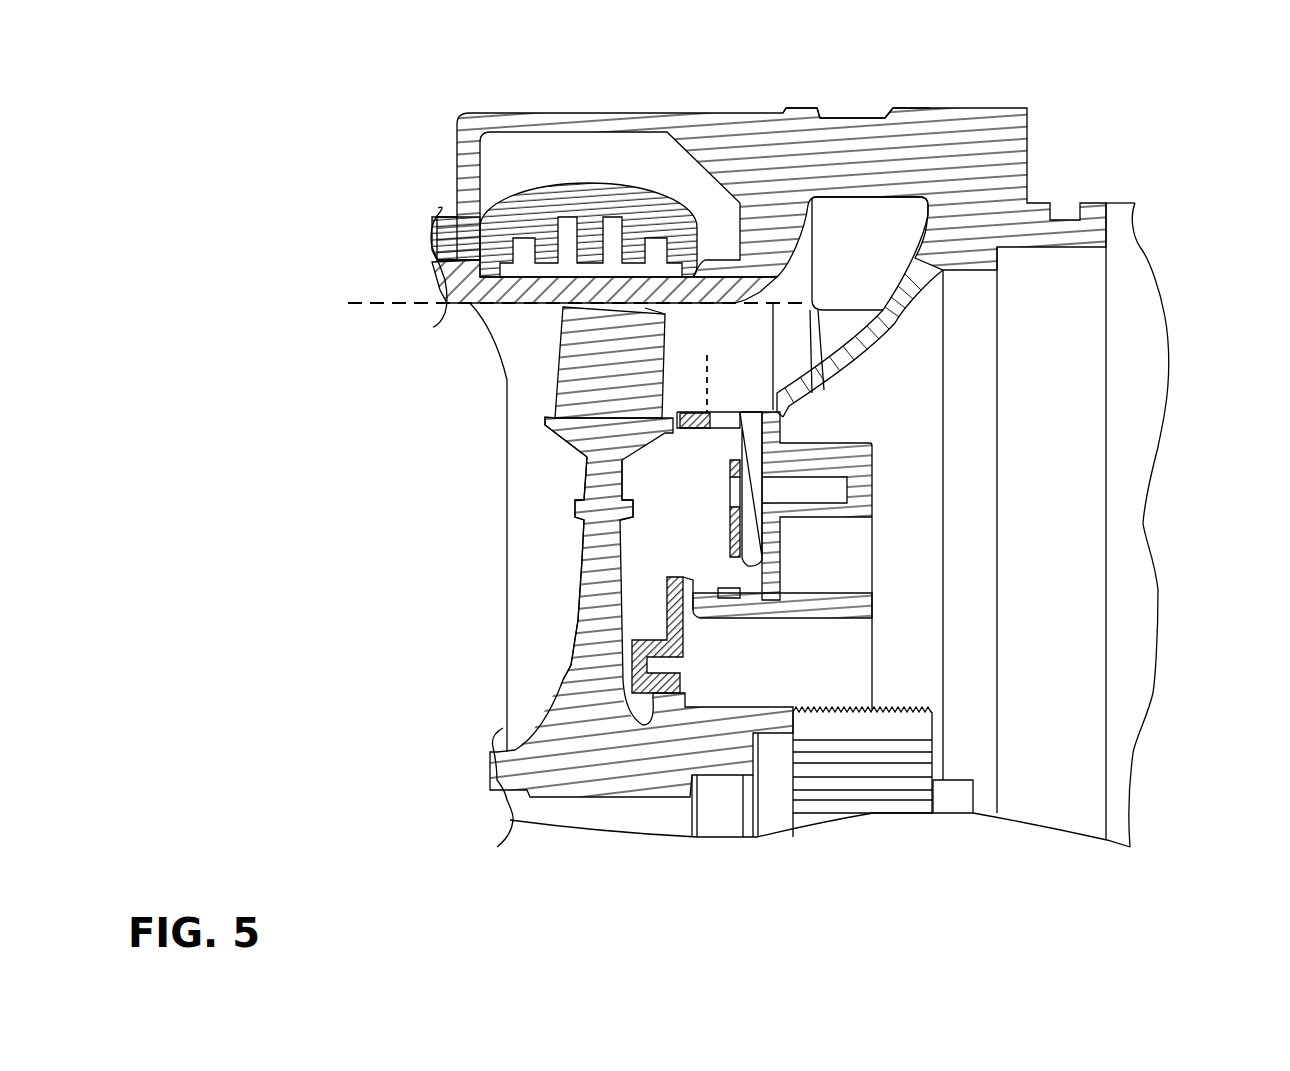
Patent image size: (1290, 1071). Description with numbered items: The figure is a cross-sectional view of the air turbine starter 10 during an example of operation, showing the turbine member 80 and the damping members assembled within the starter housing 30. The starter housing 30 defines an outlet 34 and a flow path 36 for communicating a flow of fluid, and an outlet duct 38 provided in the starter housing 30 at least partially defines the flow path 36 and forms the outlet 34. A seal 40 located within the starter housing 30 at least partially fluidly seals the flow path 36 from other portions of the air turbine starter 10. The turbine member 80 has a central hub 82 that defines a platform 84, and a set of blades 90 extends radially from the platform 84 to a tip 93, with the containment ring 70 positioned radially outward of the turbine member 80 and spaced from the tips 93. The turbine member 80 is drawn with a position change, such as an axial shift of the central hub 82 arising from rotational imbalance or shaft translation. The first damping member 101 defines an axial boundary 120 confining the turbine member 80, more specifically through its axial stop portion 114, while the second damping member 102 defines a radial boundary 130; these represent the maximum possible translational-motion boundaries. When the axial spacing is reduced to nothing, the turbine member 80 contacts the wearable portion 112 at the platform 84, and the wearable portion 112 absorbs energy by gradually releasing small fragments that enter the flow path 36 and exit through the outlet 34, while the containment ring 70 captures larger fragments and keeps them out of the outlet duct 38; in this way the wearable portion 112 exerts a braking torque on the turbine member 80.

The air turbine starter 10 is at (1273, 49).
The starter housing 30 is at (448, 119).
The outlet 34 is at (892, 117).
The flow path 36 is at (877, 249).
The outlet duct 38 is at (870, 333).
The seal 40 is at (655, 601).
The containment ring 70 is at (466, 246).
The turbine member 80 is at (543, 462).
The central hub 82 is at (578, 552).
The platform 84 is at (545, 417).
The set of blades 90 is at (551, 368).
The tip 93 is at (664, 306).
The first damping member 101 is at (750, 406).
The second damping member 102 is at (510, 190).
The wearable portion 112 is at (690, 430).
The axial stop portion 114 is at (738, 440).
The axial boundary 120 is at (709, 380).
The radial boundary 130 is at (368, 306).